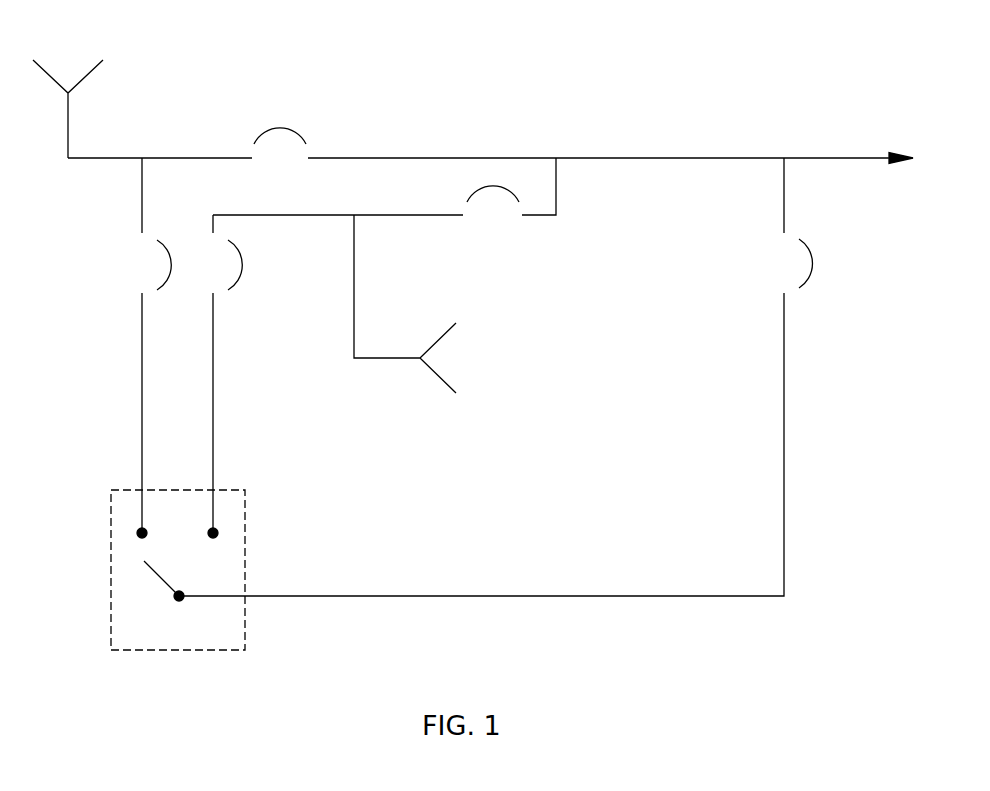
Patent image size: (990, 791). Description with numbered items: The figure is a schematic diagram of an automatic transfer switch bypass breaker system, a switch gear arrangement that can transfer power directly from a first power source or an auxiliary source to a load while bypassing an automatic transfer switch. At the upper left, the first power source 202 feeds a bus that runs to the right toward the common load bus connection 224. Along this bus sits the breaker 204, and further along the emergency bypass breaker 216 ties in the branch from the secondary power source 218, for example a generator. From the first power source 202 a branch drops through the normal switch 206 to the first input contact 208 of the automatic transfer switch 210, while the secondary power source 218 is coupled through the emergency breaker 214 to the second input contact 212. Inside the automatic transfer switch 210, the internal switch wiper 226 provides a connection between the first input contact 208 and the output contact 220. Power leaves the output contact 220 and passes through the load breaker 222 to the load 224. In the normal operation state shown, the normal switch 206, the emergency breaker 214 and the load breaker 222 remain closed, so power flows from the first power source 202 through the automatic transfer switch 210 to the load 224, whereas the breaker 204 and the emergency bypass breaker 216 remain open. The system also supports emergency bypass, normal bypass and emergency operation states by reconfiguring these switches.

The first power source 202 is at (87, 72).
The breaker 204 is at (268, 128).
The normal switch 206 is at (167, 248).
The first input contact 208 is at (137, 530).
The automatic transfer switch 210 is at (196, 640).
The second input contact 212 is at (220, 535).
The emergency breaker 214 is at (243, 270).
The emergency bypass breaker 216 is at (482, 188).
The secondary power source 218 is at (437, 380).
The output contact 220 is at (186, 592).
The load breaker 222 is at (812, 257).
The common load bus connection 224 is at (959, 168).
The internal switch wiper 226 is at (150, 570).